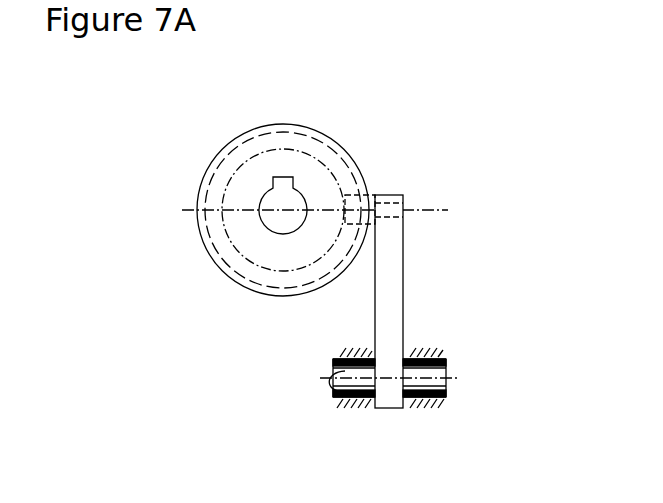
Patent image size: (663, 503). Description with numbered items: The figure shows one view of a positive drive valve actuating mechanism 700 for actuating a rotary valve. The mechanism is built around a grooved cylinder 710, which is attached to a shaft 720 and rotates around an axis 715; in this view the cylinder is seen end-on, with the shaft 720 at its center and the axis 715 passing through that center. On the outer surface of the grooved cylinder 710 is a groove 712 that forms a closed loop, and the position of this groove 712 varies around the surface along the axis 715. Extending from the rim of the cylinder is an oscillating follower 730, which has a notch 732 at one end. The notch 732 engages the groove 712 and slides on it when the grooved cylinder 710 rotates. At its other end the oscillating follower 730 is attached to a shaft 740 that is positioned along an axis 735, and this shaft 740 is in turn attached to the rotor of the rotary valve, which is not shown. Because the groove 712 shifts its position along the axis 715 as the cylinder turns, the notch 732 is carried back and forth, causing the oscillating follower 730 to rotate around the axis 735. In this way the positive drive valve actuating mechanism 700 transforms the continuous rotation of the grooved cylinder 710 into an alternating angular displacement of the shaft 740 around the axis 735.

The positive drive valve actuating mechanism 700 is at (173, 118).
The grooved cylinder 710 is at (352, 153).
The groove 712 is at (314, 142).
The axis 715 is at (283, 210).
The shaft 720 is at (270, 217).
The oscillating follower 730 is at (403, 292).
The notch 732 is at (374, 195).
The axis 735 is at (450, 372).
The shaft 740 is at (434, 393).